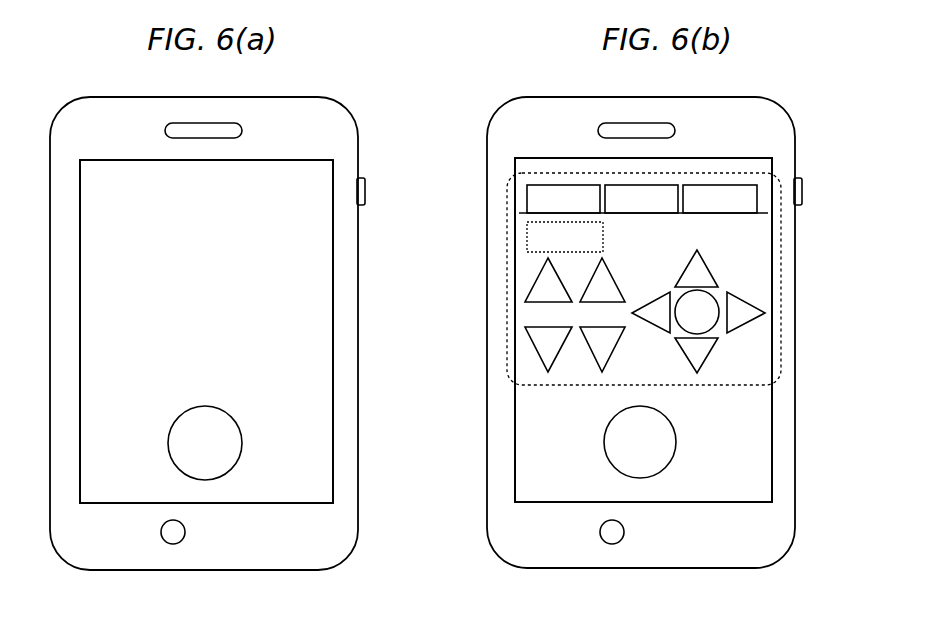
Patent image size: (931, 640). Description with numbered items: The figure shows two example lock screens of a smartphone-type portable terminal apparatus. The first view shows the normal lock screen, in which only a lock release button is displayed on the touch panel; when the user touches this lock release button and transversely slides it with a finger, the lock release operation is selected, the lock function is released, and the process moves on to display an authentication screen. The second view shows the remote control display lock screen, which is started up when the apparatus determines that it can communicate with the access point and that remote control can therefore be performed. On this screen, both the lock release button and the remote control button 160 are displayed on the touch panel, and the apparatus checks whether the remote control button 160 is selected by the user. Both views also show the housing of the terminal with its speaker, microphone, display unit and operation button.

The remote control button 160 is at (507, 298).